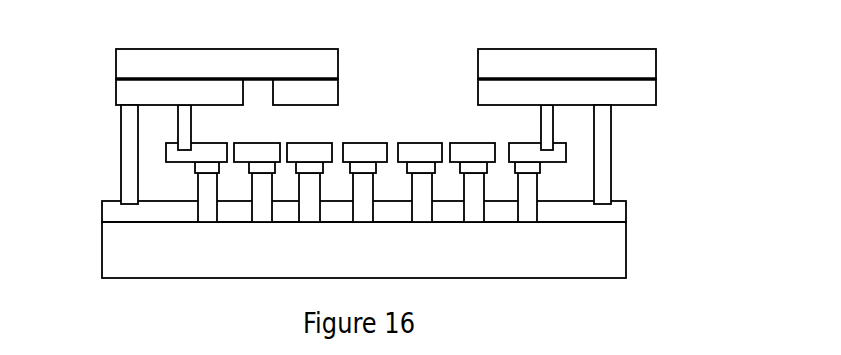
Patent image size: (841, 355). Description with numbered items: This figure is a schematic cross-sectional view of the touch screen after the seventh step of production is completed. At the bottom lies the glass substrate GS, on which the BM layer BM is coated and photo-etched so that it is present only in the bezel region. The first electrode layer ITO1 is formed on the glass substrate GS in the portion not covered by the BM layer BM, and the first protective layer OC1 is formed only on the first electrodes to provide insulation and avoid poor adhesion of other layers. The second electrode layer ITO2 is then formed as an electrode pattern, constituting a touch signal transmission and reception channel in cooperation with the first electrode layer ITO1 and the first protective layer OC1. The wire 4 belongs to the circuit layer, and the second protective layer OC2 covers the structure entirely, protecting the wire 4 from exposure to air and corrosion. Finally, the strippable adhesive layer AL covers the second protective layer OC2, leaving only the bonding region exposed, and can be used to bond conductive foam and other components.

The wire 4 is at (121, 120).
The second electrode layer ITO2 is at (166, 152).
The first protective layer OC1 is at (196, 170).
The first electrode layer ITO1 is at (538, 180).
The second protective layer OC2 is at (656, 92).
The strippable adhesive layer AL is at (656, 59).
The BM layer BM is at (626, 213).
The glass substrate GS is at (626, 249).